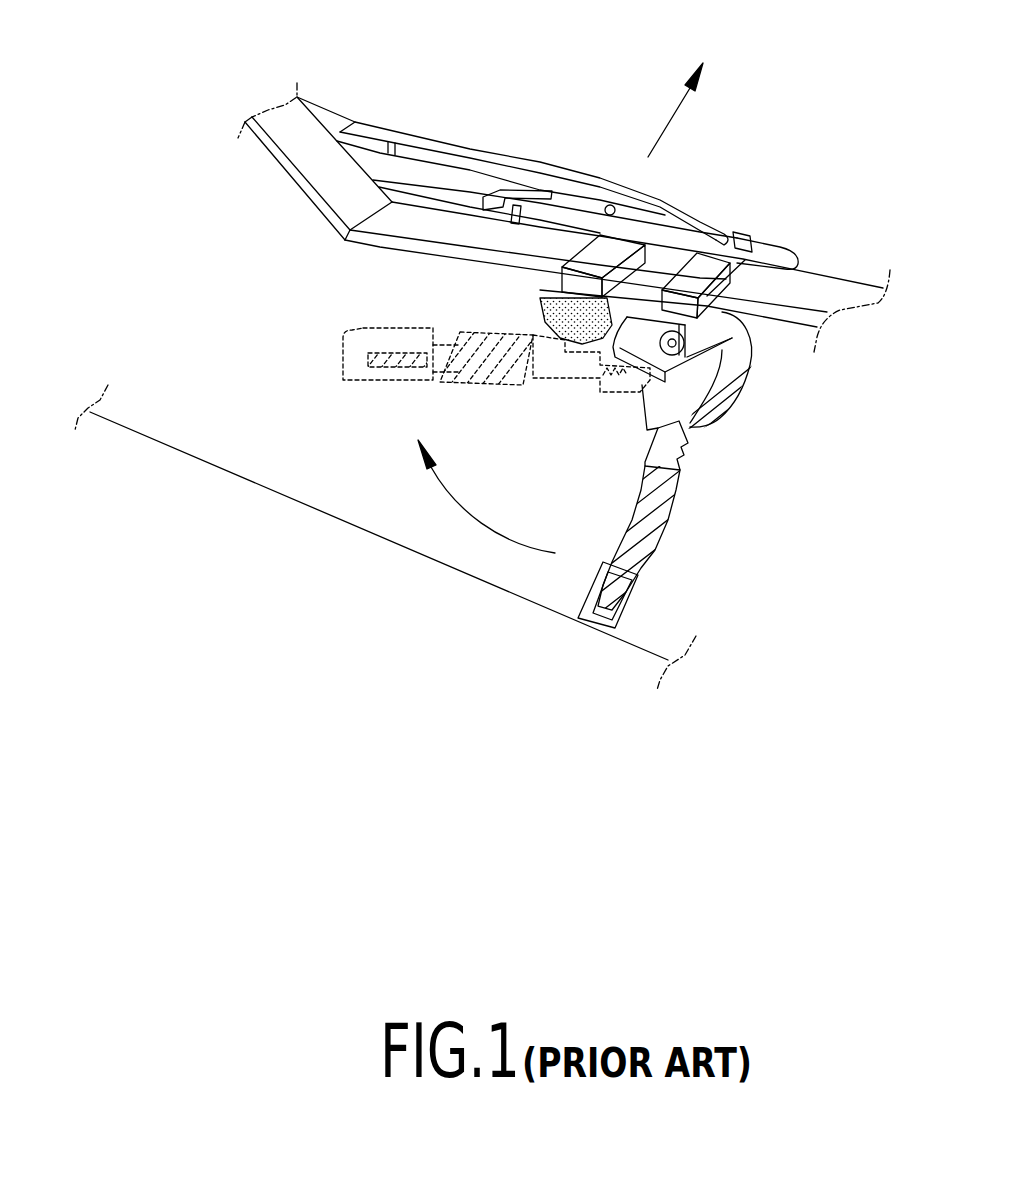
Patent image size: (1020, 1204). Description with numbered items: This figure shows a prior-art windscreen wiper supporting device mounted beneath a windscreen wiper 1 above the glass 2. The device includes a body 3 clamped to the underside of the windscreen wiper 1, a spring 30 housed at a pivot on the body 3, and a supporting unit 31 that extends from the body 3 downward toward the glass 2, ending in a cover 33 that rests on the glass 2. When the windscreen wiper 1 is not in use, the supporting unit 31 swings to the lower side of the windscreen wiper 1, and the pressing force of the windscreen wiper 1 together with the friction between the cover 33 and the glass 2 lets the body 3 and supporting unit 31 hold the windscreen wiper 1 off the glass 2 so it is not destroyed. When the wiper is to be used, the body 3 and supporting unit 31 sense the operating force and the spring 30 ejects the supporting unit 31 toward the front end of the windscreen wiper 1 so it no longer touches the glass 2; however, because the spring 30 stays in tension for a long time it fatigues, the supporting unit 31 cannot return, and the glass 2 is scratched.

The windscreen wiper 1 is at (414, 100).
The glass 2 is at (442, 602).
The body 3 is at (732, 332).
The spring 30 is at (705, 353).
The supporting unit 31 is at (657, 517).
The cover 33 is at (618, 610).